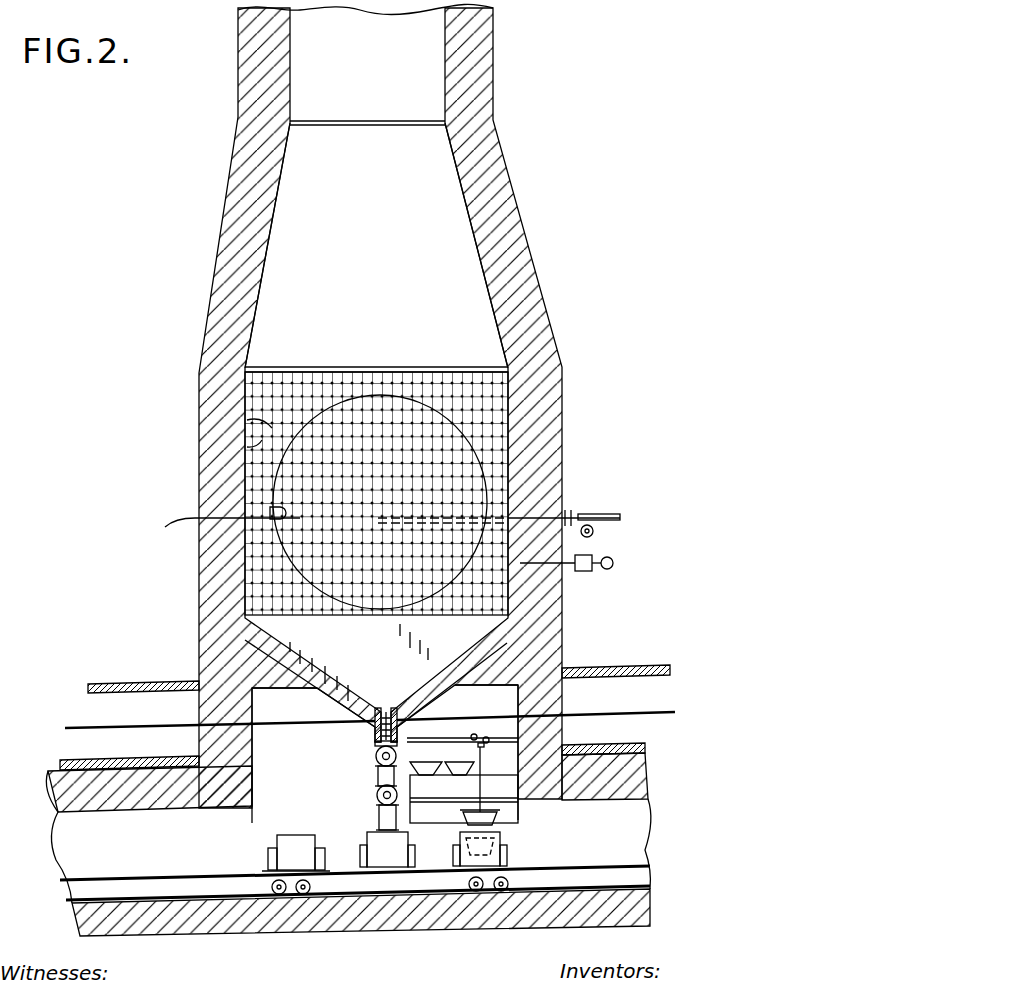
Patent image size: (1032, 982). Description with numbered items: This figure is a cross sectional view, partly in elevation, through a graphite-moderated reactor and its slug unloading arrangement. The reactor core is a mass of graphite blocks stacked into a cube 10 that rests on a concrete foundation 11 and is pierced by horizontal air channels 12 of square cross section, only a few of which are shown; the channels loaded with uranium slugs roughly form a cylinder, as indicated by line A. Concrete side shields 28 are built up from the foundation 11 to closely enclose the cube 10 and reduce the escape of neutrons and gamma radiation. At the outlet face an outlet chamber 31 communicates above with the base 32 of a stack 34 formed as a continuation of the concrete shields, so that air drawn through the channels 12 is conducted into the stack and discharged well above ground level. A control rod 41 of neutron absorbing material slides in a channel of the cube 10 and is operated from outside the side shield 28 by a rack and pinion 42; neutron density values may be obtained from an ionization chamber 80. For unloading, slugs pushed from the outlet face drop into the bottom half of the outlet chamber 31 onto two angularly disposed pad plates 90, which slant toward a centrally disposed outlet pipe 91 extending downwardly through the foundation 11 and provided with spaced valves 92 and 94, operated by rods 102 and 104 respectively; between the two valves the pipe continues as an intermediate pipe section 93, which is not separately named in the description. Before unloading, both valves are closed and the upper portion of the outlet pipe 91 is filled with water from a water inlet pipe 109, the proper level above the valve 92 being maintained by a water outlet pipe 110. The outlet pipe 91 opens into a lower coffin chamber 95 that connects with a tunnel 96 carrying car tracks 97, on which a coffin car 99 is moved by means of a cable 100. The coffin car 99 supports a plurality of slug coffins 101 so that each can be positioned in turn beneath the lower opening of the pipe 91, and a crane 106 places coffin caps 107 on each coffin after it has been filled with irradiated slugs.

The cube 10 is at (245, 478).
The concrete foundation 11 is at (318, 702).
The horizontal air channels 12 is at (245, 432).
The side shields 28 is at (215, 402).
The outlet chamber 31 is at (397, 309).
The base of stack 32 is at (512, 212).
The stack 34 is at (476, 42).
The control rod 41 is at (560, 496).
The rack and pinion 42 is at (600, 528).
The ionization chamber 80 is at (573, 568).
The pad plates 90 is at (428, 683).
The outlet pipe 91 is at (375, 742).
The valve 92 is at (376, 757).
The pipe section 93 is at (378, 776).
The valve 94 is at (378, 806).
The lower coffin chamber 95 is at (450, 862).
The tunnel 96 is at (135, 845).
The car tracks 97 is at (190, 897).
The coffin car 99 is at (358, 864).
The cable 100 is at (232, 871).
The slug coffins 101 is at (277, 839).
The rod 102 is at (396, 754).
The rod 104 is at (377, 794).
The crane 106 is at (478, 736).
The coffin caps 107 is at (480, 805).
The water inlet pipe 109 is at (662, 713).
The water outlet pipe 110 is at (90, 726).
The line A is at (226, 534).